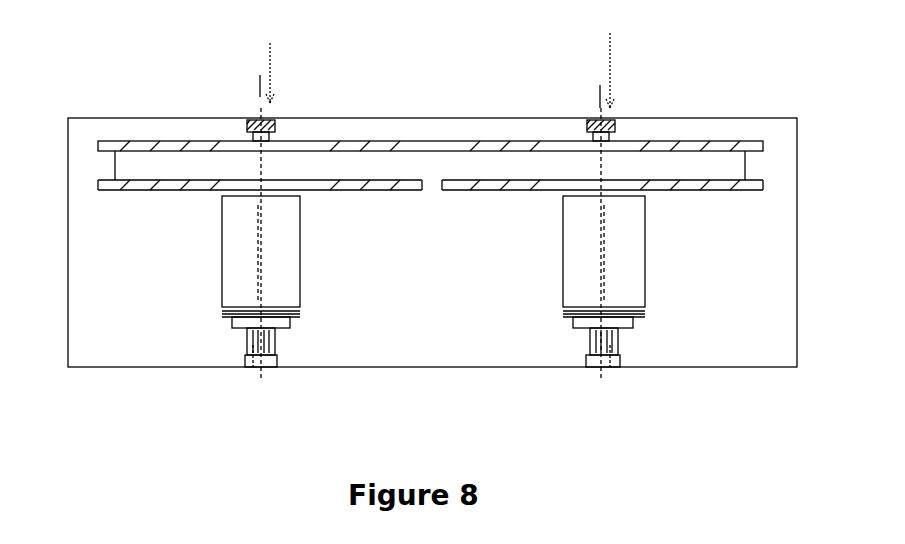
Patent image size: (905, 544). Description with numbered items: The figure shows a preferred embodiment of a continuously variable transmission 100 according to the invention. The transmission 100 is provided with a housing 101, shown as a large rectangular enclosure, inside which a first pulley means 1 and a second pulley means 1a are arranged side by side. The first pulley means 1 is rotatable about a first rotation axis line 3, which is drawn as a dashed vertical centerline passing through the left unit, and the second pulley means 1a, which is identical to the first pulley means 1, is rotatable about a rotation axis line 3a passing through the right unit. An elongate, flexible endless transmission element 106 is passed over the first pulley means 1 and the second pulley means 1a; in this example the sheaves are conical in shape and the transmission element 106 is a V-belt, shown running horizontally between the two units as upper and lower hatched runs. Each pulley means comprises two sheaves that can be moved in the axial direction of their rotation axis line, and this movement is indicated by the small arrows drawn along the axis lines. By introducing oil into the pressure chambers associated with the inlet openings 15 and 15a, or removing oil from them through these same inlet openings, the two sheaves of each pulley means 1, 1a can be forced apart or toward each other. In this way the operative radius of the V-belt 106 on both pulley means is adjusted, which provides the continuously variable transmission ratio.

The continuously variable transmission 100 is at (99, 78).
The housing 101 is at (657, 118).
The transmission element 106 is at (430, 165).
The first pulley means 1 is at (184, 283).
The second pulley means 1a is at (666, 264).
The inlet opening 15 is at (258, 243).
The inlet opening 15a is at (603, 244).
The first rotation axis line 3 is at (263, 425).
The rotation axis line 3a is at (602, 420).